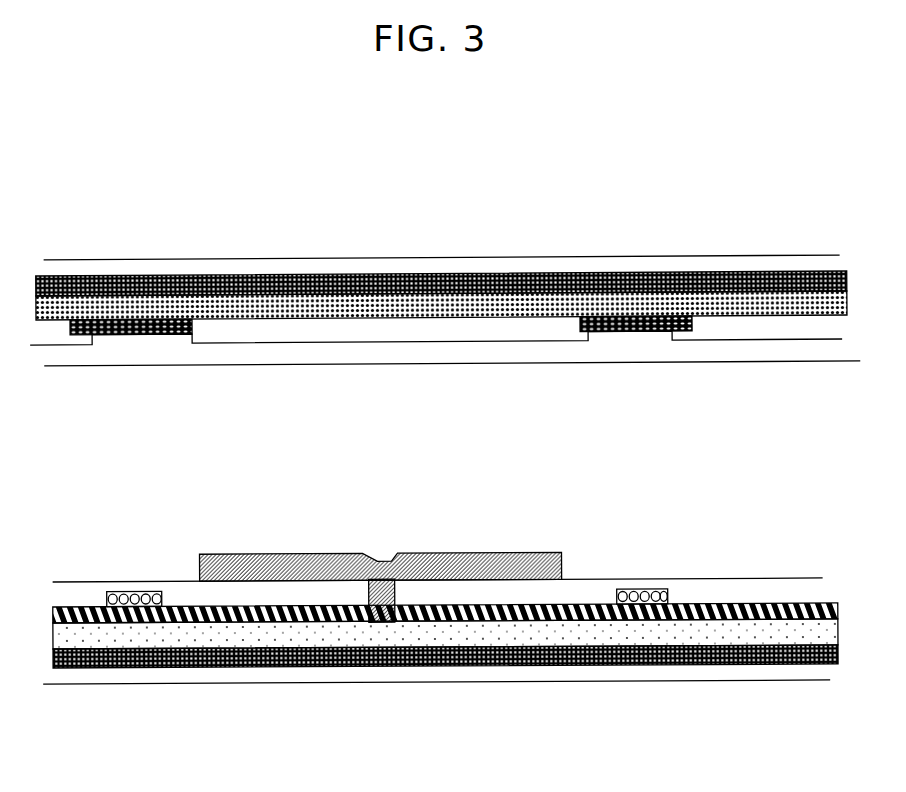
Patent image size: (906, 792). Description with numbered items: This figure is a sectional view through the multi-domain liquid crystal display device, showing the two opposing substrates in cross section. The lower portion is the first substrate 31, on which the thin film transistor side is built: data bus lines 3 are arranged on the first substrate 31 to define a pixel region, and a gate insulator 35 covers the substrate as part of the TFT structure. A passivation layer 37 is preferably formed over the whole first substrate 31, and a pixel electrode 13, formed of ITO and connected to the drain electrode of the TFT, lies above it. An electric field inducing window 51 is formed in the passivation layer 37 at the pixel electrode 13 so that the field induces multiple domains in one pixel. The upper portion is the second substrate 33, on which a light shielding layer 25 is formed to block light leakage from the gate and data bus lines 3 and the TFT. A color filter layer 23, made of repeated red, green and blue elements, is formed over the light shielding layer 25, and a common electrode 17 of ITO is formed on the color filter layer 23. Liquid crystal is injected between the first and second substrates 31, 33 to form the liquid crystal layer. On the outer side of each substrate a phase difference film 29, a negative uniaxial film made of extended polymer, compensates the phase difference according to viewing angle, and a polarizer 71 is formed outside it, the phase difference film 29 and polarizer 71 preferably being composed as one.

The data bus line 3 is at (127, 591).
The pixel electrode 13 is at (430, 562).
The common electrode 17 is at (250, 355).
The color filter layer 23 is at (438, 335).
The light shielding layer 25 is at (635, 318).
The phase difference film 29 is at (492, 280).
The first substrate 31 is at (368, 627).
The second substrate 33 is at (233, 308).
The gate insulator 35 is at (252, 613).
The passivation layer 37 is at (687, 595).
The electric field inducing window 51 is at (382, 548).
The polarizer 71 is at (100, 268).